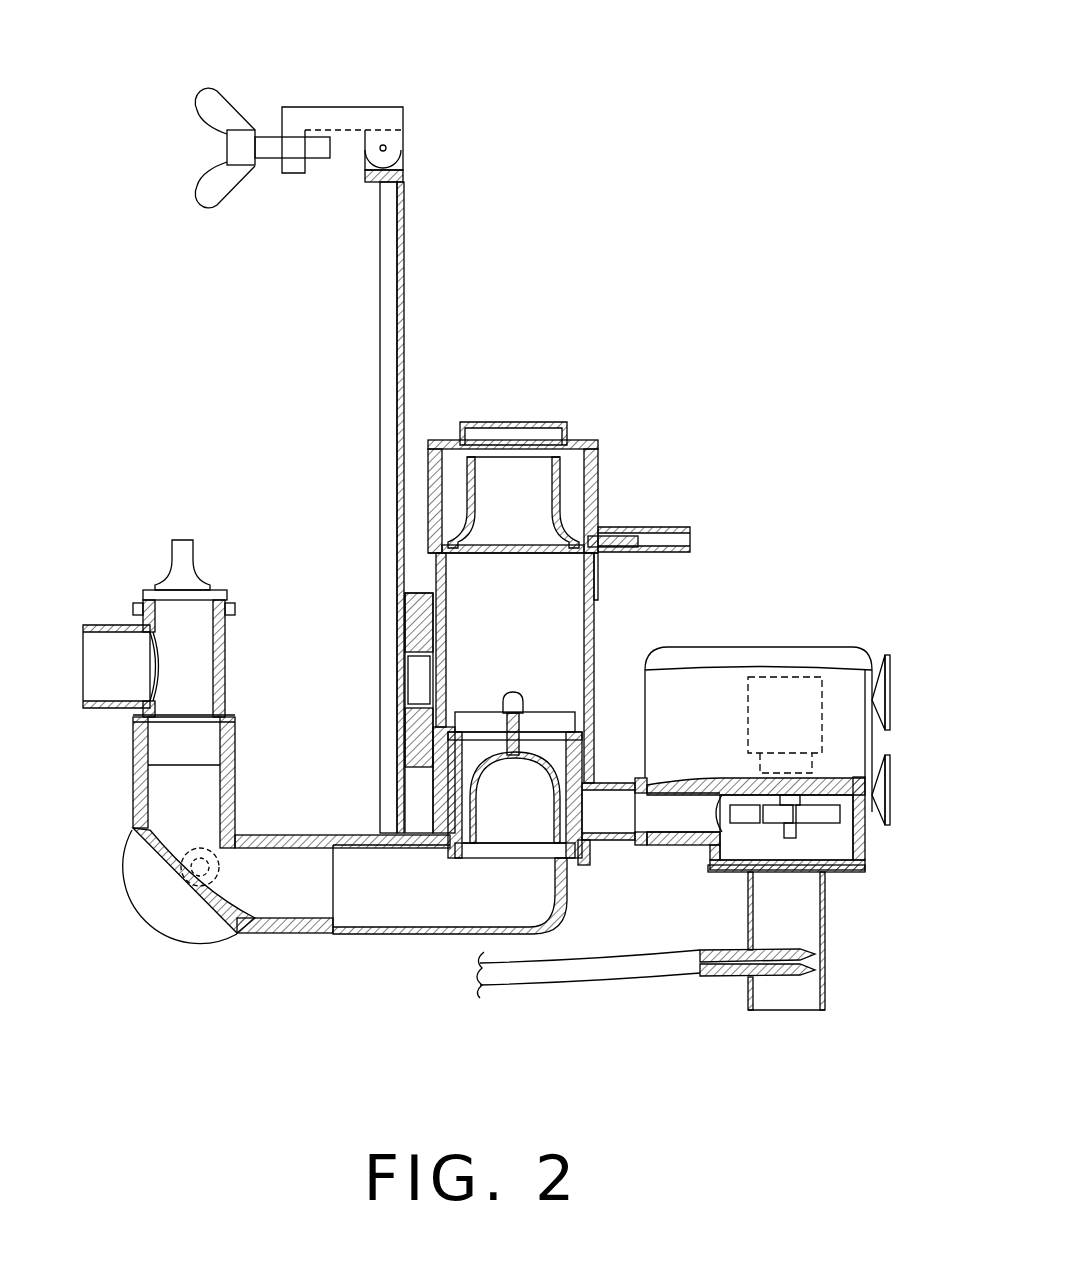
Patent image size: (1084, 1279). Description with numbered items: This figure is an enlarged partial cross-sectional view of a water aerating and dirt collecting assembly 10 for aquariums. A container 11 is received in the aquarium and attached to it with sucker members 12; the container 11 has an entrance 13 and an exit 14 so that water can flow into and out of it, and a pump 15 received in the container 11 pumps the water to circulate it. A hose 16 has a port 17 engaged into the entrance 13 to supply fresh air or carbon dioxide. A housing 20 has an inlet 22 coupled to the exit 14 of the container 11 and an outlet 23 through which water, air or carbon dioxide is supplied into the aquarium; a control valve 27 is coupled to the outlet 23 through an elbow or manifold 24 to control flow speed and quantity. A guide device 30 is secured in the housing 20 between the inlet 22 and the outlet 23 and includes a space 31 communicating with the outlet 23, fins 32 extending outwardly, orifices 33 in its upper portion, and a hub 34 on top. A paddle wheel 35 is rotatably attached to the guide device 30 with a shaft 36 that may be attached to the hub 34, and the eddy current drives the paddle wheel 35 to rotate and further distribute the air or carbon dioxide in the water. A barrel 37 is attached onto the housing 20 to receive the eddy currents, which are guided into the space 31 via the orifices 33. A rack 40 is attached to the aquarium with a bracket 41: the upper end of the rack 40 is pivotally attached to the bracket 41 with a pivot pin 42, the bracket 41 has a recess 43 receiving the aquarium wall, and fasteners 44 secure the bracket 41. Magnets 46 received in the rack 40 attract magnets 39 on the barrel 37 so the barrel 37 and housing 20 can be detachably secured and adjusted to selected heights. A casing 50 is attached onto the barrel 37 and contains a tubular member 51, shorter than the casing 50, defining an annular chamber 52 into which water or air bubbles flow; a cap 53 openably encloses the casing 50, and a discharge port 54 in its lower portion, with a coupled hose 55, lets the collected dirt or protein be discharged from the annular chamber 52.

The water aerating and dirt collecting assembly 10 is at (758, 420).
The container 11 is at (856, 655).
The sucker members 12 is at (882, 800).
The entrance 13 is at (826, 922).
The exit 14 is at (667, 845).
The pump 15 is at (780, 678).
The hose 16 is at (590, 968).
The port 17 is at (748, 990).
The housing 20 is at (582, 843).
The inlet 22 is at (623, 847).
The outlet 23 is at (402, 935).
The elbows or manifolds 24 is at (165, 888).
The control valve 27 is at (145, 605).
The guide device 30 is at (462, 805).
The space 31 is at (505, 820).
The fins 32 is at (467, 757).
The orifices 33 is at (492, 722).
The hub 34 is at (523, 745).
The paddle wheel 35 is at (560, 720).
The shaft 36 is at (513, 690).
The barrel 37 is at (592, 635).
The magnets 39 is at (470, 750).
The rack 40 is at (382, 415).
The bracket 41 is at (340, 113).
The pivot pin 42 is at (390, 148).
The recess 43 is at (350, 153).
The fasteners 44 is at (233, 150).
The magnets 46 is at (405, 270).
The casing 50 is at (600, 512).
The tubular member 51 is at (520, 480).
The annular chamber 52 is at (567, 513).
The cap 53 is at (512, 422).
The discharge port 54 is at (622, 546).
The hose 55 is at (692, 535).